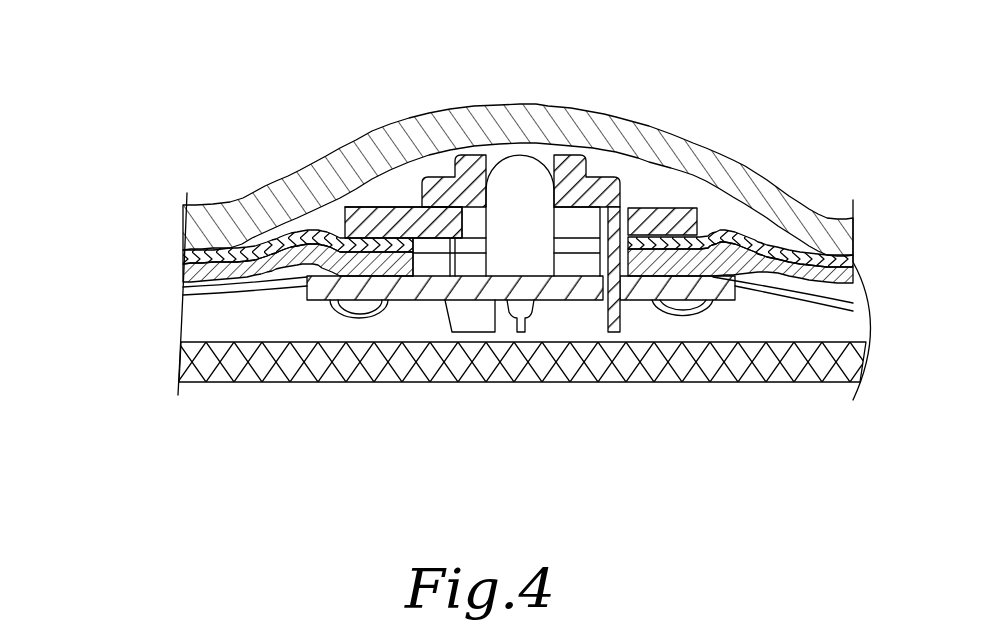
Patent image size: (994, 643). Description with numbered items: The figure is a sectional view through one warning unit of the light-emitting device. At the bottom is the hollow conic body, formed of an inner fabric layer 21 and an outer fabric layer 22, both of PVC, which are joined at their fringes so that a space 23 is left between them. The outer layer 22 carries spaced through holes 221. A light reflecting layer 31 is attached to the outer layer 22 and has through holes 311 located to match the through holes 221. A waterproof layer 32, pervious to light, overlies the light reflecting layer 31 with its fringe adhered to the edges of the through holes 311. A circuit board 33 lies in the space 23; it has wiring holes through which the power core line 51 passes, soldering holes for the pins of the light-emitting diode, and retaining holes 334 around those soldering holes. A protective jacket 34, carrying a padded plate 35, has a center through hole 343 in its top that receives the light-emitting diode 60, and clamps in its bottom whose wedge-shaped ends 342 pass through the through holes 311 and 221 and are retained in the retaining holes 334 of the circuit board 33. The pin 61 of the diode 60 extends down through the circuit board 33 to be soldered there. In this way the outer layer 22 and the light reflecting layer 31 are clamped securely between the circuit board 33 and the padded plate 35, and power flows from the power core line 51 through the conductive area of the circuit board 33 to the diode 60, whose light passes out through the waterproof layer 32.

The inner fabric layer 21 is at (202, 362).
The outer fabric layer 22 is at (183, 275).
The space 23 is at (352, 323).
The light reflecting layer 31 is at (453, 203).
The through hole of the light reflecting layer 311 is at (628, 227).
The waterproof layer 32 is at (203, 225).
The circuit board 33 is at (404, 291).
The protective jacket 34 is at (510, 138).
The wedge-shaped end 342 is at (476, 312).
The center through hole 343 is at (486, 152).
The retaining hole 334 is at (618, 333).
The padded plate 35 is at (408, 215).
The power core line 51 is at (238, 293).
The light emitting element 60 is at (522, 182).
The pin 61 is at (521, 333).
The through hole of the outer layer 221 is at (682, 238).